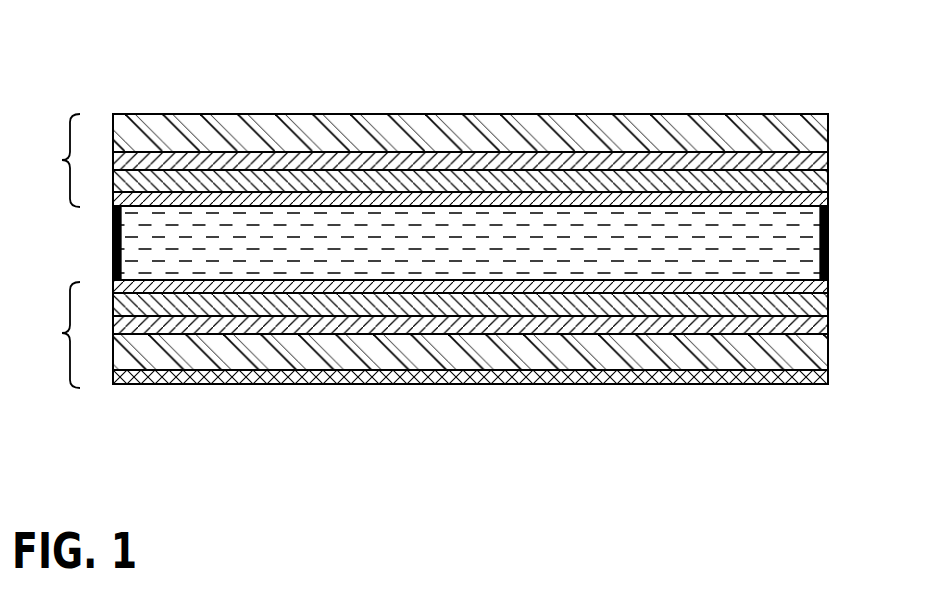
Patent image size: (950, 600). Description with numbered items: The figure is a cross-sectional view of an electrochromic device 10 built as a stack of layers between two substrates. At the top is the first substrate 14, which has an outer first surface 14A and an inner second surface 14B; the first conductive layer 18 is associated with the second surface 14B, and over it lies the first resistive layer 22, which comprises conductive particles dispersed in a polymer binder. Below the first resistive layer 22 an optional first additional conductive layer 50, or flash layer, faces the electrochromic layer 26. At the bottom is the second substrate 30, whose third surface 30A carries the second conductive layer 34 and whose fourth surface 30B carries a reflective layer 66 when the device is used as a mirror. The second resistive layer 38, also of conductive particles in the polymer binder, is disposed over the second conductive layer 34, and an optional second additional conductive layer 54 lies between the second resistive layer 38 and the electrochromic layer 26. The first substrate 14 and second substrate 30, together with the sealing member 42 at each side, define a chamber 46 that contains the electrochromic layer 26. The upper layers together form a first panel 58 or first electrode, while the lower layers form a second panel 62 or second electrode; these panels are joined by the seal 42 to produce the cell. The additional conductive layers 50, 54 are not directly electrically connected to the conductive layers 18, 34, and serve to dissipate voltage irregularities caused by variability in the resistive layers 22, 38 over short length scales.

The electrochromic device 10 is at (128, 91).
The first substrate 14 is at (810, 133).
The first surface 14A is at (607, 114).
The second surface 14B is at (676, 152).
The first conductive layer 18 is at (820, 160).
The first resistive layer 22 is at (828, 180).
The first additional conductive layer 50 is at (828, 198).
The sealing member 42 is at (832, 237).
The chamber 46 is at (408, 244).
The electrochromic layer 26 is at (615, 250).
The second additional conductive layer 54 is at (823, 287).
The second resistive layer 38 is at (823, 300).
The second conductive layer 34 is at (822, 325).
The second substrate 30 is at (797, 353).
The third surface 30A is at (708, 335).
The fourth surface 30B is at (775, 385).
The reflective layer 66 is at (823, 378).
The first panel 58 is at (52, 160).
The second panel 62 is at (52, 335).